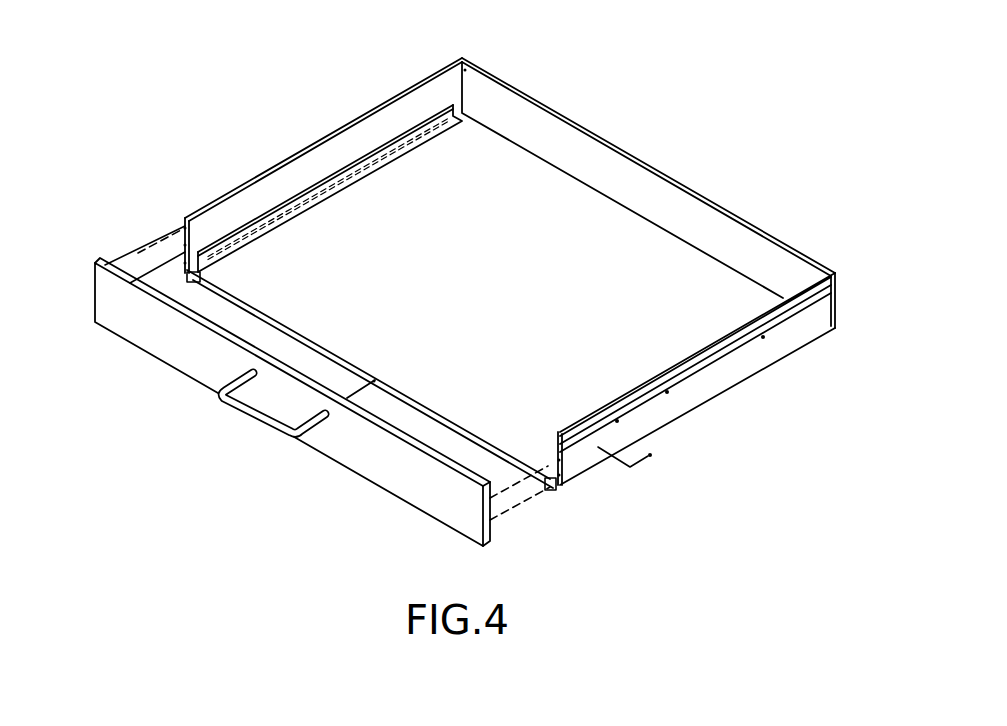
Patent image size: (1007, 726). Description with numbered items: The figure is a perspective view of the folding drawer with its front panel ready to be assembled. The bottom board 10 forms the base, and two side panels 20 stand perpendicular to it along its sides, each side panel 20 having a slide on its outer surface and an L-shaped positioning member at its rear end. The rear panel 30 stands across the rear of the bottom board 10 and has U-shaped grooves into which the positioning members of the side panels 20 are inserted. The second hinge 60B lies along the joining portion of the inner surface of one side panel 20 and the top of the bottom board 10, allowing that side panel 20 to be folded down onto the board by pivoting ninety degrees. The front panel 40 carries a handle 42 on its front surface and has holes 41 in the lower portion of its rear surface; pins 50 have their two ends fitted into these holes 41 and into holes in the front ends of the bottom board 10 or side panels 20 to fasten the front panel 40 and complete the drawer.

The bottom board 10 is at (562, 220).
The side panel 20 is at (403, 113).
The rear panel 30 is at (688, 213).
The front panel 40 is at (391, 463).
The holes 41 is at (117, 263).
The handle 42 is at (247, 413).
The pins 50 is at (185, 224).
The second hinge 60B is at (347, 181).